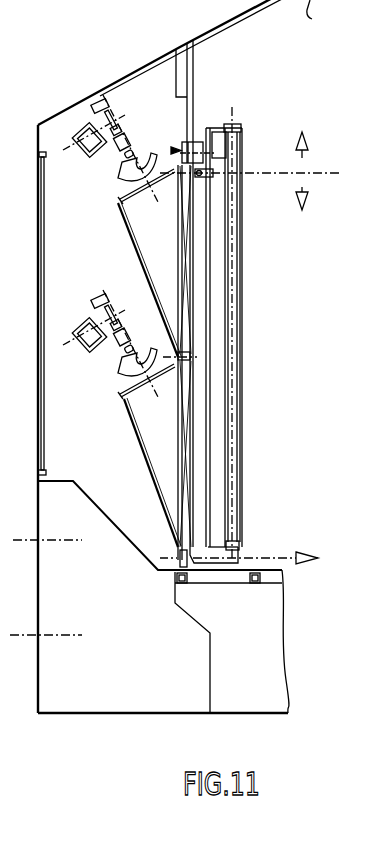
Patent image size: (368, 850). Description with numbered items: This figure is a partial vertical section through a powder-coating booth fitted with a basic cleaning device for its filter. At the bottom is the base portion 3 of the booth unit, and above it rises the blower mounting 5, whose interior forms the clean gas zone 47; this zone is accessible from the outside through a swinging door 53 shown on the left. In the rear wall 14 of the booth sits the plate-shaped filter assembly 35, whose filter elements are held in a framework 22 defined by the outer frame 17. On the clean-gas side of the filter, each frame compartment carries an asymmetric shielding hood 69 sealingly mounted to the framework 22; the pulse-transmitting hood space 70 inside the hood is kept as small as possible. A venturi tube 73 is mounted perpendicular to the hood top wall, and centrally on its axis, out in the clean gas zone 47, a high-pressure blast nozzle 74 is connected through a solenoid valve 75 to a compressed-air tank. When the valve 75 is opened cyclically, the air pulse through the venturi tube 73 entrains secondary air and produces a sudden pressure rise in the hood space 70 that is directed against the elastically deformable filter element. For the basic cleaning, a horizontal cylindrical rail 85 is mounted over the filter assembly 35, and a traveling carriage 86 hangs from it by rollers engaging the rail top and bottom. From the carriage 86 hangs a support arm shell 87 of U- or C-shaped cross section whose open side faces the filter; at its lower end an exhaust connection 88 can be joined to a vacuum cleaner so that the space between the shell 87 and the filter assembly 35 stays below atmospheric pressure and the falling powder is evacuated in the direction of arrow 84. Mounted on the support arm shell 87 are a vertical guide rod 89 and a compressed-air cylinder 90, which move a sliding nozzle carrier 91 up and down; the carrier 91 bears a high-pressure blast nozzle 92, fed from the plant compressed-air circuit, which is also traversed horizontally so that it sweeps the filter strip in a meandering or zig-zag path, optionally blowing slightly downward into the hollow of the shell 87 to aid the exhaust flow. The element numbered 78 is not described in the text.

The base portion 3 is at (242, 666).
The blower mounting 5 is at (56, 108).
The rear wall 14 is at (190, 104).
The outer frame 17 is at (178, 556).
The framework 22 is at (122, 146).
The filter assembly 35 is at (110, 148).
The clean gas zone 47 is at (89, 253).
The swinging door 53 is at (41, 273).
The shielding hood 69 is at (138, 455).
The hood space 70 is at (149, 374).
The venturi tube 73 is at (118, 370).
The high-pressure blast nozzle 74 is at (133, 344).
The solenoid valve 75 is at (107, 310).
The rail 78 is at (233, 574).
The arrow 84 is at (259, 547).
The cylindrical track or rail 85 is at (183, 144).
The traveling carriage 86 is at (205, 134).
The support arm shell 87 is at (198, 297).
The exhaust connection 88 is at (240, 556).
The vertical guide rod 89 is at (232, 460).
The compressed-air cylinder 90 is at (217, 420).
The sliding nozzle carrier 91 is at (216, 157).
The high-pressure blast nozzle 92 is at (211, 178).